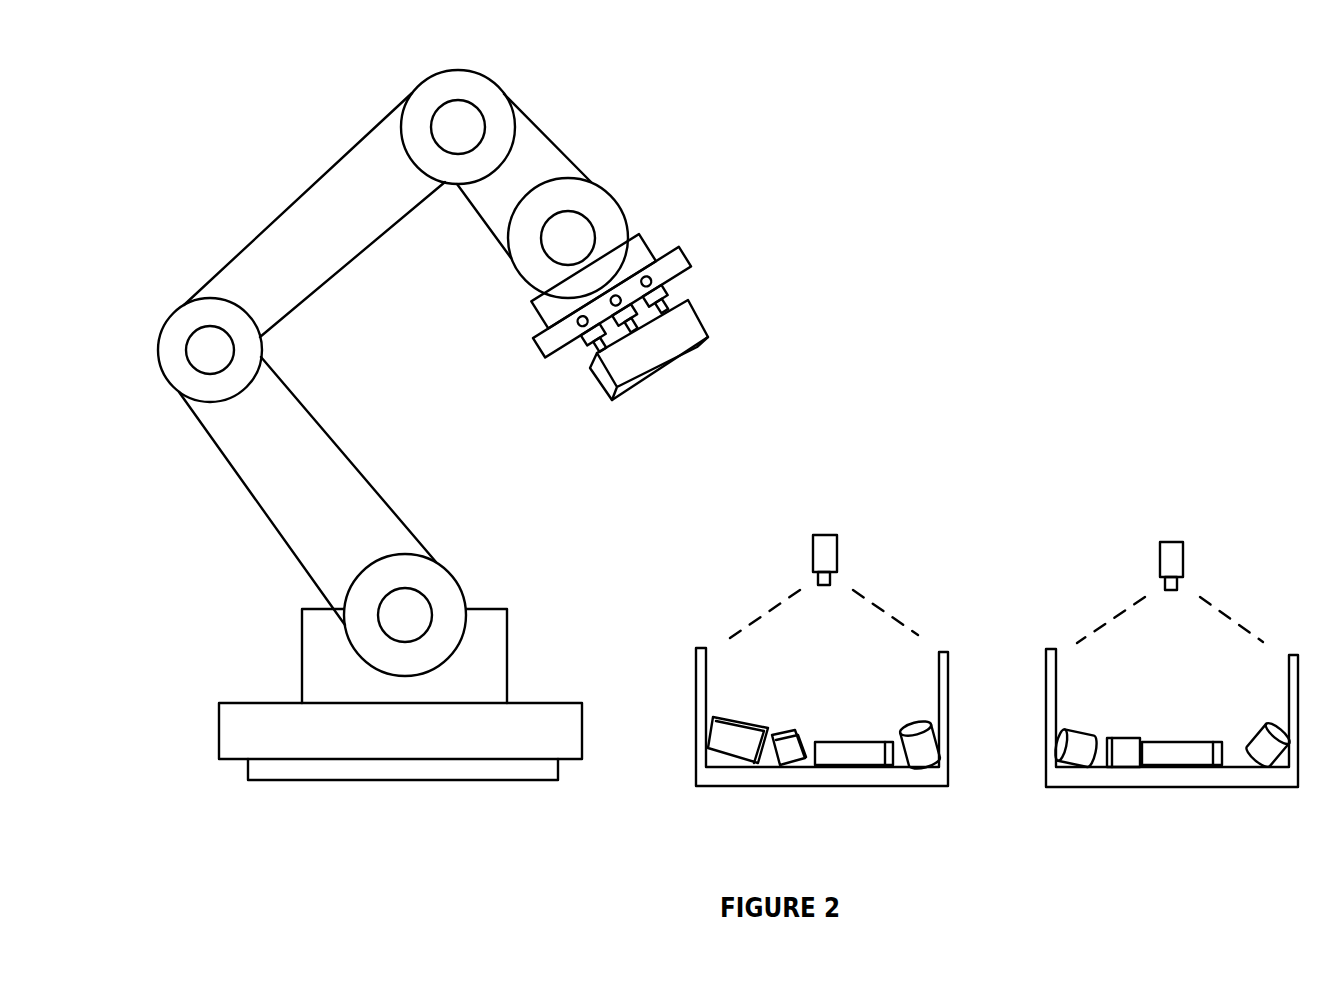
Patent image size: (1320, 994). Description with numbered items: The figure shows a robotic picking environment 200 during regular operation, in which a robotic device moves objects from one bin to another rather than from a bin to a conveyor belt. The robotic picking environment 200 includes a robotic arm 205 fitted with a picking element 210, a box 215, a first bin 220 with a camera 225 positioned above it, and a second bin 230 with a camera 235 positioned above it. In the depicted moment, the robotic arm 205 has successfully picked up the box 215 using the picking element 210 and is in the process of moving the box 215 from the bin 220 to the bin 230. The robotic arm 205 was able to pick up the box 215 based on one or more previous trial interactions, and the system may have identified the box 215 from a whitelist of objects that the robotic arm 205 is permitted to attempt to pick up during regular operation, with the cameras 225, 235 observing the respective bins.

The robotic picking environment 200 is at (184, 76).
The robotic arm 205 is at (155, 352).
The picking element 210 is at (537, 340).
The box 215 is at (643, 395).
The bin 220 is at (692, 765).
The camera 225 is at (813, 530).
The bin 230 is at (1042, 765).
The camera 235 is at (1160, 536).